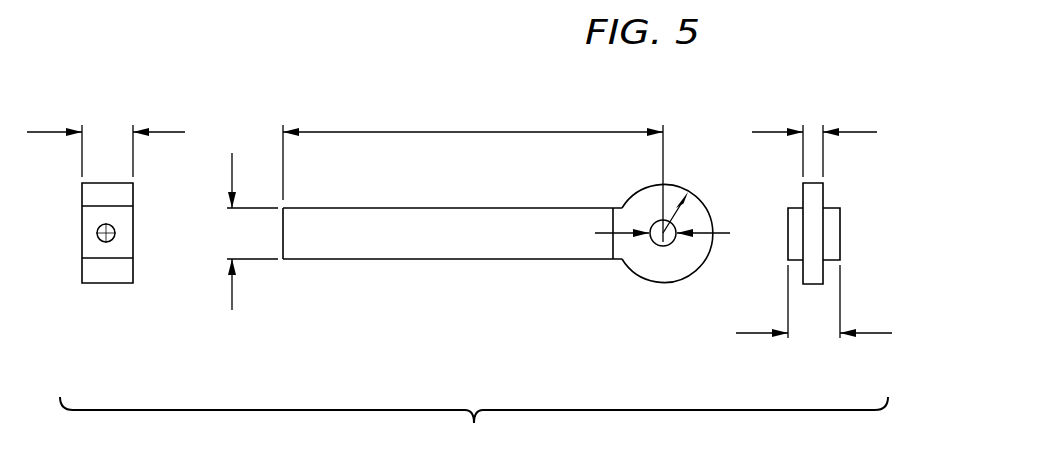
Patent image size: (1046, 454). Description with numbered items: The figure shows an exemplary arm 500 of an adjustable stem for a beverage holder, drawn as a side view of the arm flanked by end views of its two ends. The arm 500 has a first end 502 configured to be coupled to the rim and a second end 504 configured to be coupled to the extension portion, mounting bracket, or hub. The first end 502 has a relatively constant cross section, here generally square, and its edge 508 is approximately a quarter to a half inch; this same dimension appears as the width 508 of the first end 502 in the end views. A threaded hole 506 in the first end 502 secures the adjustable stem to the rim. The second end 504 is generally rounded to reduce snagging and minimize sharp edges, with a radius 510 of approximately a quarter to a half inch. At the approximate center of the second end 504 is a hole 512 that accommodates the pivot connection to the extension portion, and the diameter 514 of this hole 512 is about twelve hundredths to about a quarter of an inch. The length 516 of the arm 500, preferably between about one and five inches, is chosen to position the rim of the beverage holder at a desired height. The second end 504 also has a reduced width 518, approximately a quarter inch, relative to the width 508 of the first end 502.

The arm 500 is at (433, 182).
The first end 502 is at (298, 260).
The second end 504 is at (673, 183).
The threaded hole 506 is at (110, 240).
The edge 508 is at (108, 130).
The radius 510 is at (674, 213).
The hole 512 is at (658, 245).
The diameter 514 is at (725, 237).
The length 516 is at (479, 132).
The reduced width 518 is at (812, 130).